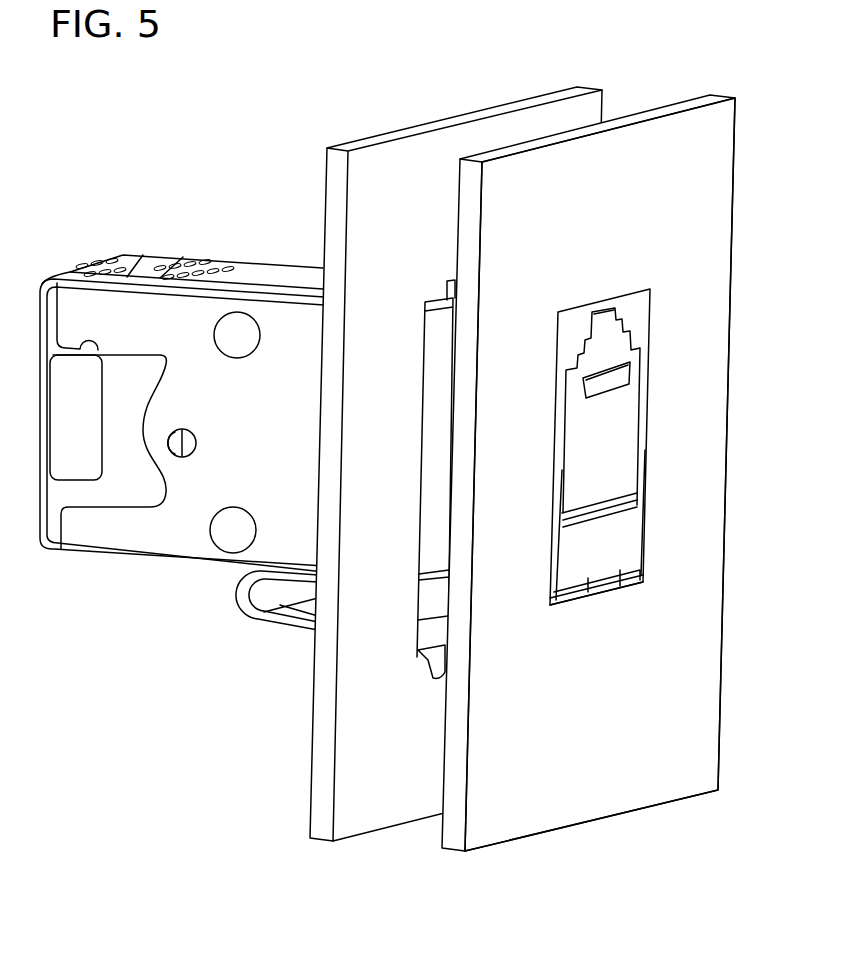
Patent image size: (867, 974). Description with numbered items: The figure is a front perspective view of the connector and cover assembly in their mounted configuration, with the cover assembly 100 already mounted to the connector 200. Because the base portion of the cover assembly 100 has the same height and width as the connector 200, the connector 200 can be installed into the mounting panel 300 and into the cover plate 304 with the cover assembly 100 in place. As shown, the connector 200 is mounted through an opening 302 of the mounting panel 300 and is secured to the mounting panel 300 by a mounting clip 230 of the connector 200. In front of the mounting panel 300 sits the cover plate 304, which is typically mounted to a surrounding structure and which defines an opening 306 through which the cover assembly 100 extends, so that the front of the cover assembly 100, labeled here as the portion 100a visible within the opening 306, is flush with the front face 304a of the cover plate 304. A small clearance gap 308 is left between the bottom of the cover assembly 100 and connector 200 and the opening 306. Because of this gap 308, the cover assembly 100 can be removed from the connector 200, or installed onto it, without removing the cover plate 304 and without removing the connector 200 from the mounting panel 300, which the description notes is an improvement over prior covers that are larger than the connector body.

The cover assembly 100 is at (618, 477).
The latch of connector 100a is at (618, 413).
The connector 200 is at (165, 553).
The mounting clip 230 is at (280, 632).
The mounting panel 300 is at (362, 823).
The opening 302 is at (425, 658).
The cover plate 304 is at (503, 825).
The front face 304a is at (609, 798).
The opening 306 is at (603, 586).
The clearance gap 308 is at (560, 595).